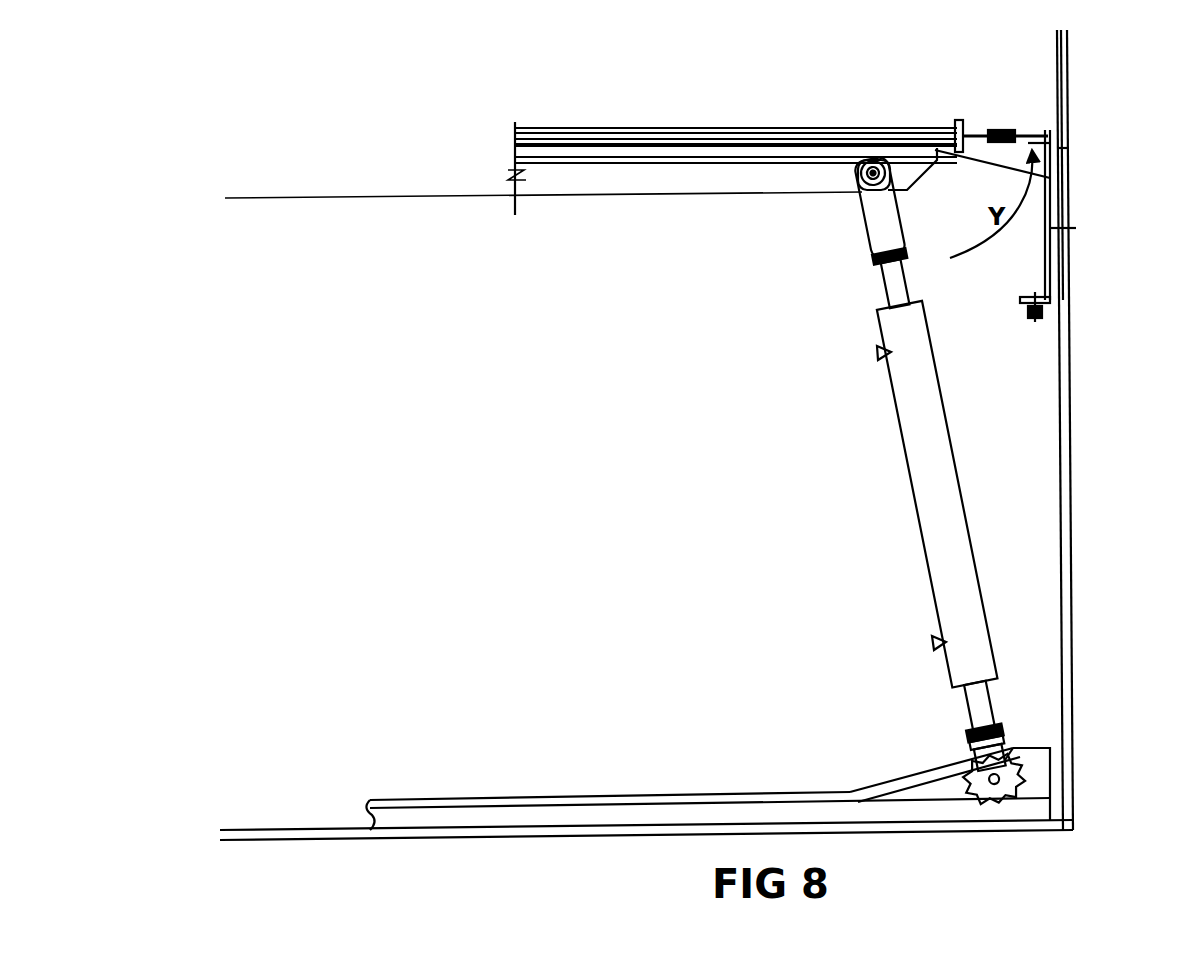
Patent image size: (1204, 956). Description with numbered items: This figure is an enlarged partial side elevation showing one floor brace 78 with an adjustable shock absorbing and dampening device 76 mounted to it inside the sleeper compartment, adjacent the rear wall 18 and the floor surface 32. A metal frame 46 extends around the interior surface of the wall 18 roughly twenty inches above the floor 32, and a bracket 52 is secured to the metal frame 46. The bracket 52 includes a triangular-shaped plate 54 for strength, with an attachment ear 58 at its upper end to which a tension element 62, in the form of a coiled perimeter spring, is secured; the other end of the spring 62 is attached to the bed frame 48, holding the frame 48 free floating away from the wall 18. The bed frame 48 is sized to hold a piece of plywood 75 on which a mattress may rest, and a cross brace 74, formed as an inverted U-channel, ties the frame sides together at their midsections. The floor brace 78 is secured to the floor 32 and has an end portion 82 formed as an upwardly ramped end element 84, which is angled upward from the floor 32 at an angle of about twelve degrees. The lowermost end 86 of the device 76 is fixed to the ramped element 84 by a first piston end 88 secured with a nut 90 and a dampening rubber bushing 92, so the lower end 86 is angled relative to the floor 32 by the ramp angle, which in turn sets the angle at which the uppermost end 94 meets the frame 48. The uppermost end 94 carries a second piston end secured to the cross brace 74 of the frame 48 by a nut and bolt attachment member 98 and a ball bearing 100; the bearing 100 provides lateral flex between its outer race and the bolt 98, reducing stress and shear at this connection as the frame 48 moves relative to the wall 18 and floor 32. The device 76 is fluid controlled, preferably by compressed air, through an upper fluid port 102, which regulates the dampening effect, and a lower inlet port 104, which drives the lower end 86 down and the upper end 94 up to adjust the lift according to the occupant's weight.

The rear wall 18 is at (1066, 72).
The floor surface 32 is at (950, 830).
The metal frame 46 is at (1066, 313).
The bed frame 48 is at (1050, 155).
The bracket 52 is at (1070, 228).
The triangular-shaped plate 54 is at (1068, 156).
The attachment ear 58 is at (1043, 128).
The tension element 62 is at (1000, 128).
The cross brace 74 is at (612, 192).
The piece of plywood 75 is at (612, 128).
The shock absorbing and dampening device 76 is at (970, 528).
The floor brace 78 is at (504, 796).
The end portion 82 is at (974, 760).
The ramped end element 84 is at (905, 786).
The lowermost end 86 is at (1005, 725).
The first piston end 88 is at (1006, 740).
The nut 90 is at (1006, 788).
The dampening rubber bushing 92 is at (1002, 770).
The uppermost end 94 is at (862, 234).
The nut and bolt attachment member 98 is at (862, 194).
The ball bearing 100 is at (866, 170).
The upper fluid port 102 is at (876, 352).
The lower inlet port 104 is at (933, 645).